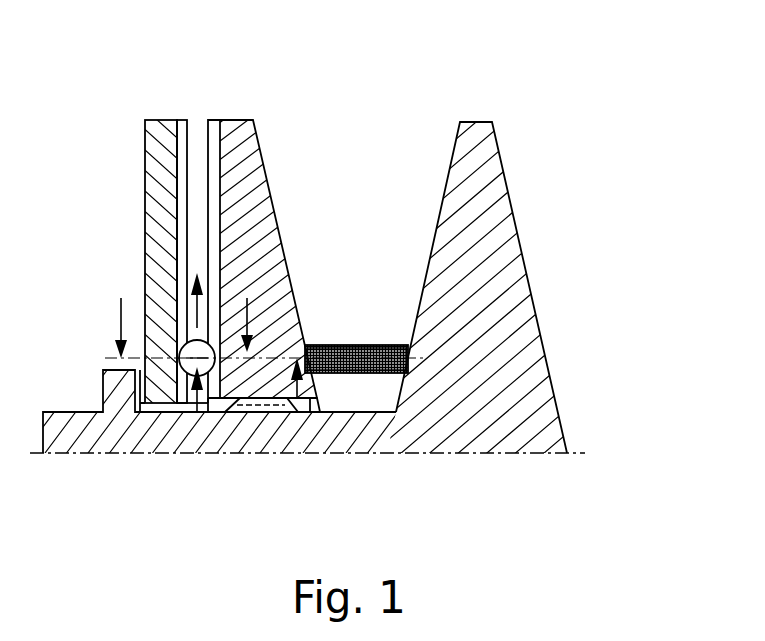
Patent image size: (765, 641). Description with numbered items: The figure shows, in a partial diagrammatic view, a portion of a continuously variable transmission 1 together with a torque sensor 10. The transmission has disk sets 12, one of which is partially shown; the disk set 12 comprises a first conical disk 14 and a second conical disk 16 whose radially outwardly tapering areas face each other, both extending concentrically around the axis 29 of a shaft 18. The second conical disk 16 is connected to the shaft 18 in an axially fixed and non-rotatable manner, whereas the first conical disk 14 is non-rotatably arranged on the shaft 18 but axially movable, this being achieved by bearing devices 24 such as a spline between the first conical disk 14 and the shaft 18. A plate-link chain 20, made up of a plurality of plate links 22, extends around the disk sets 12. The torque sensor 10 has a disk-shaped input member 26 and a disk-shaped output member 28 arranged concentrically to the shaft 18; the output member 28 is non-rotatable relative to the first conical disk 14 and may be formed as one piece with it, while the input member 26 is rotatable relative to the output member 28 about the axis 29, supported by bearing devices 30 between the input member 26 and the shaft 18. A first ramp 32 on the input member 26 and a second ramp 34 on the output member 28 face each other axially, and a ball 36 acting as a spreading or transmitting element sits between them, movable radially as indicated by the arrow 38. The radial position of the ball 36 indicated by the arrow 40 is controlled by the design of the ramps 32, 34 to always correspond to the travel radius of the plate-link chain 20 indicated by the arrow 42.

The continuously variable transmission 1 is at (592, 140).
The torque sensor 10 is at (193, 112).
The disk set 12 is at (350, 152).
The first conical disk 14 is at (225, 121).
The second conical disk 16 is at (521, 252).
The shaft 18 is at (353, 430).
The plate-link chain 20 is at (357, 345).
The plate links 22 is at (374, 345).
The bearing devices 24 is at (229, 412).
The input member 26 is at (162, 143).
The output member 28 is at (215, 170).
The axis 29 is at (464, 458).
The bearing devices 30 is at (163, 412).
The first ramp 32 is at (178, 168).
The second ramp 34 is at (213, 175).
The ball 36 is at (142, 416).
The arrow 38 is at (192, 322).
The arrow 40 is at (197, 412).
The arrow 42 is at (290, 412).